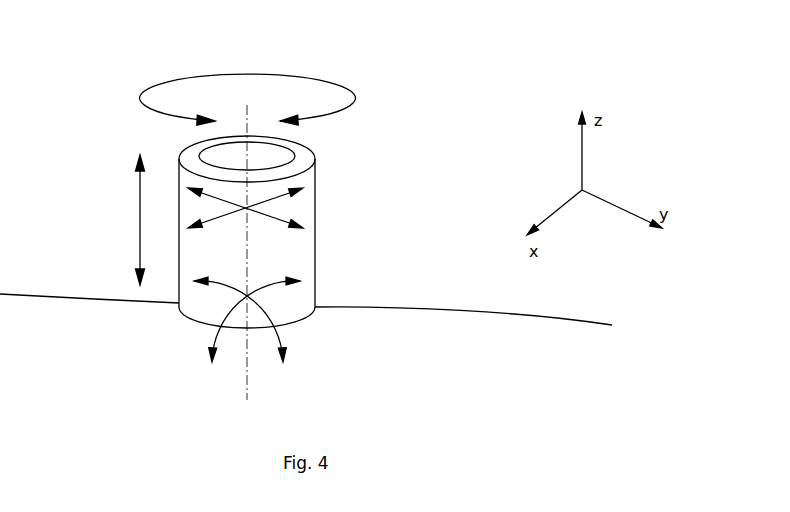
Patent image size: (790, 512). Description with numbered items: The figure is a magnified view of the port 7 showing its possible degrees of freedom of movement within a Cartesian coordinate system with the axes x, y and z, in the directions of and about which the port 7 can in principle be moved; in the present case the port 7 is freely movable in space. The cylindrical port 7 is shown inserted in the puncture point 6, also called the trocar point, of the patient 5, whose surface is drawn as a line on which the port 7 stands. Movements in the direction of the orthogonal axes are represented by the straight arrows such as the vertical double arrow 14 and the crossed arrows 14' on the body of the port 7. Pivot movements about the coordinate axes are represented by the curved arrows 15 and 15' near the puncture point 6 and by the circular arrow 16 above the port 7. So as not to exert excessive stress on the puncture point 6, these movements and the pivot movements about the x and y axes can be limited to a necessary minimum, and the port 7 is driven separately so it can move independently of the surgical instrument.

The patient 5 is at (428, 333).
The puncture point 6 is at (318, 333).
The port 7 is at (316, 206).
The arrow 14 is at (97, 220).
The arrow 14' is at (278, 175).
The arrow 15 is at (198, 319).
The arrow 15' is at (248, 381).
The arrow 16 is at (163, 80).